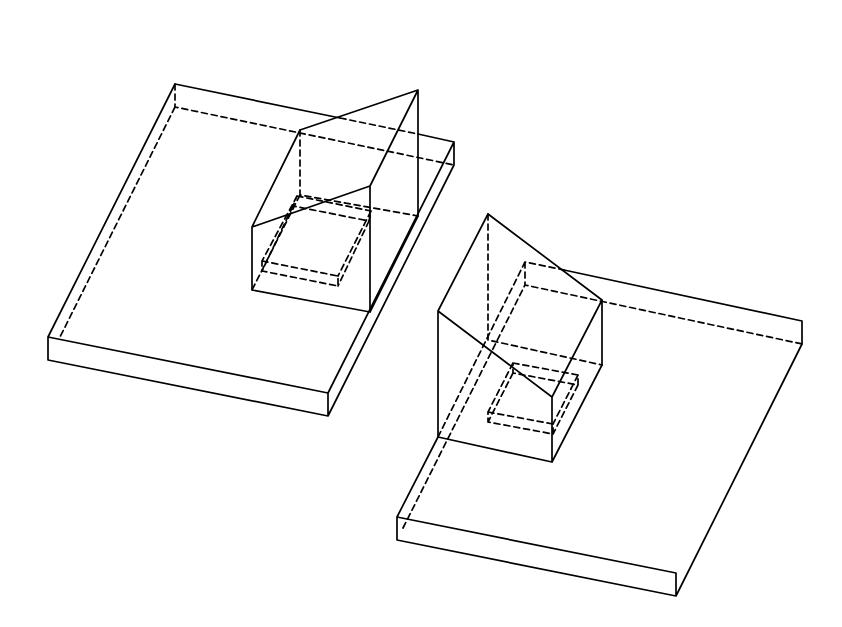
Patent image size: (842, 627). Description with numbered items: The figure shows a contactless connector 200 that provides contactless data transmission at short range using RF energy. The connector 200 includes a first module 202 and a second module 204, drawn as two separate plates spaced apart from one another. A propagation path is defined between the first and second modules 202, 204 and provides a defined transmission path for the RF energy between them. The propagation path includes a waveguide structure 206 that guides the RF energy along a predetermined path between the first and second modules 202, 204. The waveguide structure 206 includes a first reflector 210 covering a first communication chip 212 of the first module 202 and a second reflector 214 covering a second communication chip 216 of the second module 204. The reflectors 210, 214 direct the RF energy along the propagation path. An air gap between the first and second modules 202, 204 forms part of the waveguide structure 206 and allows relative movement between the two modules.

The contactless connector 200 is at (494, 75).
The first module 202 is at (264, 74).
The second module 204 is at (644, 230).
The waveguide structure 206 is at (532, 157).
The first reflector 210 is at (385, 115).
The first communication chip 212 is at (322, 255).
The second reflector 214 is at (520, 242).
The second communication chip 216 is at (487, 410).